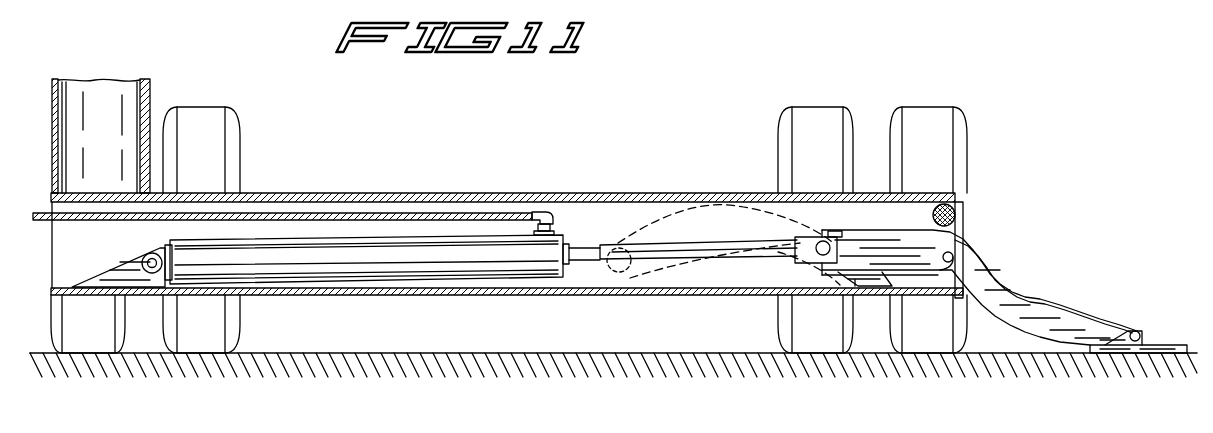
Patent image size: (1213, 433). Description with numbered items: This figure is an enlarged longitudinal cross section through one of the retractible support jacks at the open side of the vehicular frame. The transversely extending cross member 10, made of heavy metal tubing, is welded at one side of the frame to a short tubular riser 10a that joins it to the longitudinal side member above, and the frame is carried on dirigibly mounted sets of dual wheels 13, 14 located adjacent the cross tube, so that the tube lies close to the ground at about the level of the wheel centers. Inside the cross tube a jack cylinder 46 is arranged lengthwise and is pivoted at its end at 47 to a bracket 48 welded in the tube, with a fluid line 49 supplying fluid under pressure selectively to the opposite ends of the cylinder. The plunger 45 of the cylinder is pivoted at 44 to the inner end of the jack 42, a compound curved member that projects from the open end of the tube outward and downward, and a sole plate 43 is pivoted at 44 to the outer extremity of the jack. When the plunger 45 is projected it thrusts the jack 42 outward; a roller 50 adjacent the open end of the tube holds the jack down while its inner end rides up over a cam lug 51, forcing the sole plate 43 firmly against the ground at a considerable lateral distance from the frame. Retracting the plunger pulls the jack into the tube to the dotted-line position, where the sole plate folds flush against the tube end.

The cross member 10 is at (585, 193).
The tubular riser 10a is at (150, 94).
The dual wheels 13 is at (222, 121).
The dual wheels 14 is at (900, 112).
The jack 42 is at (1000, 280).
The sole plate 43 is at (1160, 344).
The pivot 44 is at (838, 237).
The plunger 45 is at (720, 245).
The jack cylinder 46 is at (468, 272).
The pivot 47 is at (160, 256).
The bracket 48 is at (112, 276).
The fluid line 49 is at (38, 220).
The roller 50 is at (958, 215).
The cam lug 51 is at (872, 289).